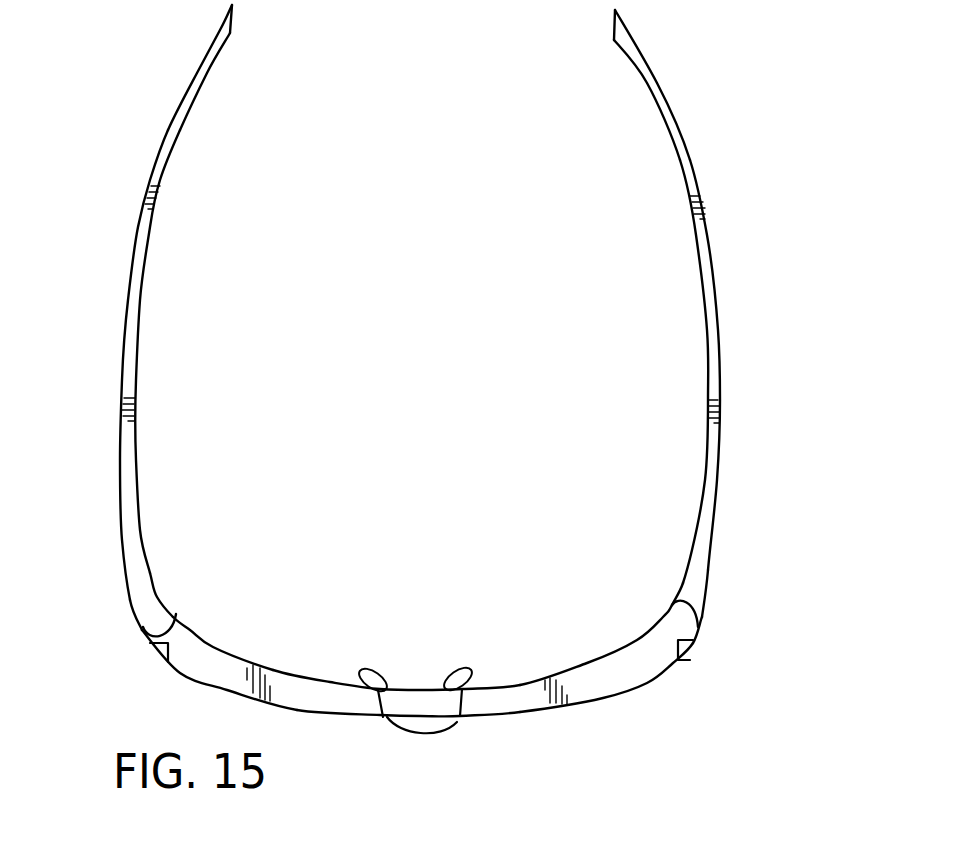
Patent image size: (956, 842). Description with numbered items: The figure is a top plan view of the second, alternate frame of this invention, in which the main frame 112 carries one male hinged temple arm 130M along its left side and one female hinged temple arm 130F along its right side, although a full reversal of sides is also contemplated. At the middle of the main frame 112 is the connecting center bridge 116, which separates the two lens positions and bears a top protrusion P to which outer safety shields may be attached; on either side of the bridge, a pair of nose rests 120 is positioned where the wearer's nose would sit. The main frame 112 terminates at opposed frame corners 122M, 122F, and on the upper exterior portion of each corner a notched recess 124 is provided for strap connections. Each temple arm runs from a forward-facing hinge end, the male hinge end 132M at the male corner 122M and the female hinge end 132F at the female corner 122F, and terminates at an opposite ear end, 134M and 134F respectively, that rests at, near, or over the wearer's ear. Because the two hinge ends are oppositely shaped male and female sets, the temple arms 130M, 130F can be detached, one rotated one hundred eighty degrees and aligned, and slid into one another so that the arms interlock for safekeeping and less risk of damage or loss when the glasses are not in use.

The main frame 112 is at (602, 675).
The connecting center bridge 116 is at (410, 705).
The nose rests 120 is at (458, 662).
The male frame corner 122M is at (192, 635).
The female frame corner 122F is at (660, 640).
The notched recess 124 is at (155, 658).
The male hinged temple arm 130M is at (136, 379).
The female hinged temple arm 130F is at (705, 210).
The male hinge end 132M is at (148, 602).
The female hinge end 132F is at (712, 575).
The male temple ear end 134M is at (207, 72).
The female temple ear end 134F is at (643, 50).
The top protrusion P is at (448, 727).